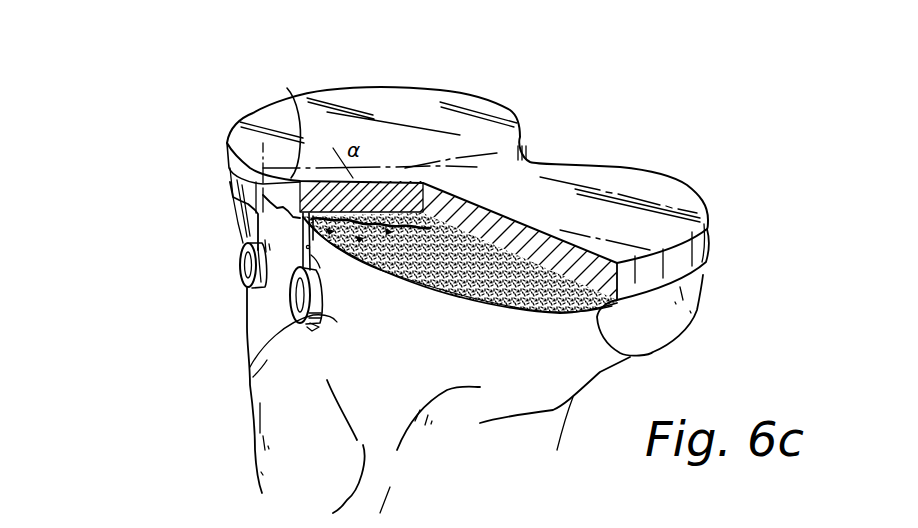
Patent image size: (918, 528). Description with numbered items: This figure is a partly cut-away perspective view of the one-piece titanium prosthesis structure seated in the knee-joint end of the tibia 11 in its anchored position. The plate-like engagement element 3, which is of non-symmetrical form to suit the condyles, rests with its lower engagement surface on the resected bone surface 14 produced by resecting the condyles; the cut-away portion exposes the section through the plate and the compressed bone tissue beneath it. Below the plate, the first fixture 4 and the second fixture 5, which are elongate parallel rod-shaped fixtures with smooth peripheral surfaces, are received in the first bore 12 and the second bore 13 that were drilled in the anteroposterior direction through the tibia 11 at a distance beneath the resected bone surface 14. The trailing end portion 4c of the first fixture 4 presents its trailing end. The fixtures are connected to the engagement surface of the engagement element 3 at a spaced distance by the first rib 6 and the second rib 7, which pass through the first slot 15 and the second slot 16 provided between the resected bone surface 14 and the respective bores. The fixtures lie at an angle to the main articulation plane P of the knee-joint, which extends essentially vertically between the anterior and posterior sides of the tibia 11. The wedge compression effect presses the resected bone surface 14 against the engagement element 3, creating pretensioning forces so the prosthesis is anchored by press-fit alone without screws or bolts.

The plate-like engagement element 3 is at (703, 200).
The main articulation plane P is at (288, 119).
The resected bone surface 14 is at (560, 313).
The second rib 7 is at (237, 205).
The second slot 16 is at (237, 220).
The second fixture 5 is at (240, 258).
The second bore 13 is at (253, 292).
The first rib 6 is at (303, 238).
The first slot 15 is at (313, 258).
The first fixture 4 is at (297, 300).
The trailing end portion 4c is at (320, 317).
The first bore 12 is at (247, 383).
The tibia 11 is at (437, 360).